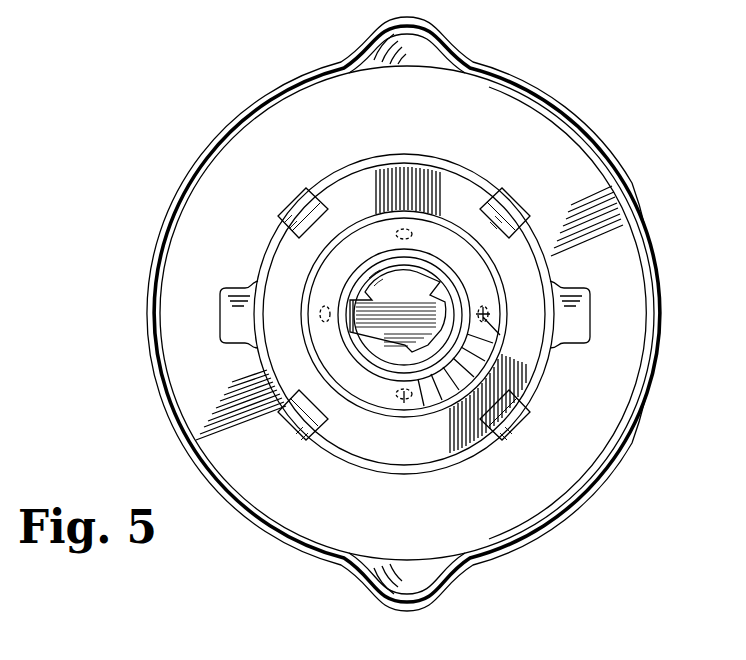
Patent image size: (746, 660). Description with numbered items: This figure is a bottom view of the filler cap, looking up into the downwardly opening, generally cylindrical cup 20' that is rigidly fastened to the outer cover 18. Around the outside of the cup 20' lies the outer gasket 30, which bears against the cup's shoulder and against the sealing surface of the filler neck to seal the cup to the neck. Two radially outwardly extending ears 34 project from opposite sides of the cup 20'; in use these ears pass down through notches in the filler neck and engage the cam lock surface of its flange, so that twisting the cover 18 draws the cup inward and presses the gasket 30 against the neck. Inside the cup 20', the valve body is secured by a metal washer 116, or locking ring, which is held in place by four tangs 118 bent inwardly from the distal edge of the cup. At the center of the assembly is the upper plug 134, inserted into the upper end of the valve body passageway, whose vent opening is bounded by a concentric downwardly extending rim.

The outer cover 18 is at (642, 222).
The outer gasket 30 is at (500, 110).
The ears 34 is at (222, 289).
The metal washer 116 is at (284, 353).
The tangs 118 is at (298, 200).
The cup 20' is at (450, 267).
The upper plug 134 is at (397, 342).